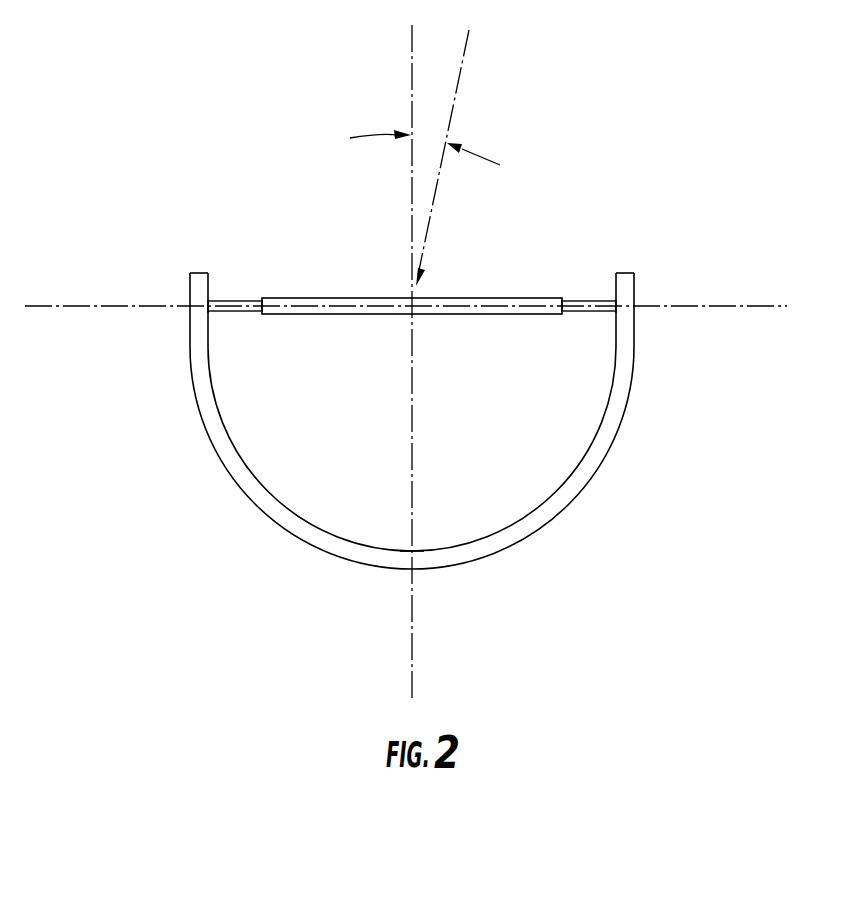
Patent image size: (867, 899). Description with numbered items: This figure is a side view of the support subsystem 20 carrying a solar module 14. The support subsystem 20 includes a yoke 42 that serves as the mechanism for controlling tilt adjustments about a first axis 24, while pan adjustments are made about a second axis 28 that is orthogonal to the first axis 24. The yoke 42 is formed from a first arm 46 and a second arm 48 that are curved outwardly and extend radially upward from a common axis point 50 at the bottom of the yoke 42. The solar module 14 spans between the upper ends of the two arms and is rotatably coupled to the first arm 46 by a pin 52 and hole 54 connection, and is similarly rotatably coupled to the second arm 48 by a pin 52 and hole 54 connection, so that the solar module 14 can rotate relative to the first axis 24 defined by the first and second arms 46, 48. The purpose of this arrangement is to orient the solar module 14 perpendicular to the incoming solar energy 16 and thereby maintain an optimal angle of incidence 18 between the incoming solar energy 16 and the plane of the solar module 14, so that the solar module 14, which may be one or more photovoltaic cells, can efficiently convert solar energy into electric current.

The solar module 14 is at (510, 298).
The incoming solar energy 16 is at (466, 48).
The angle of incidence 18 is at (471, 152).
The support subsystem 20 is at (252, 566).
The first axis 24 is at (690, 305).
The second axis 28 is at (412, 615).
The yoke 42 is at (230, 458).
The first arm 46 is at (190, 363).
The second arm 48 is at (623, 420).
The common axis point 50 is at (412, 553).
The pin 52 is at (228, 300).
The hole 54 is at (208, 313).